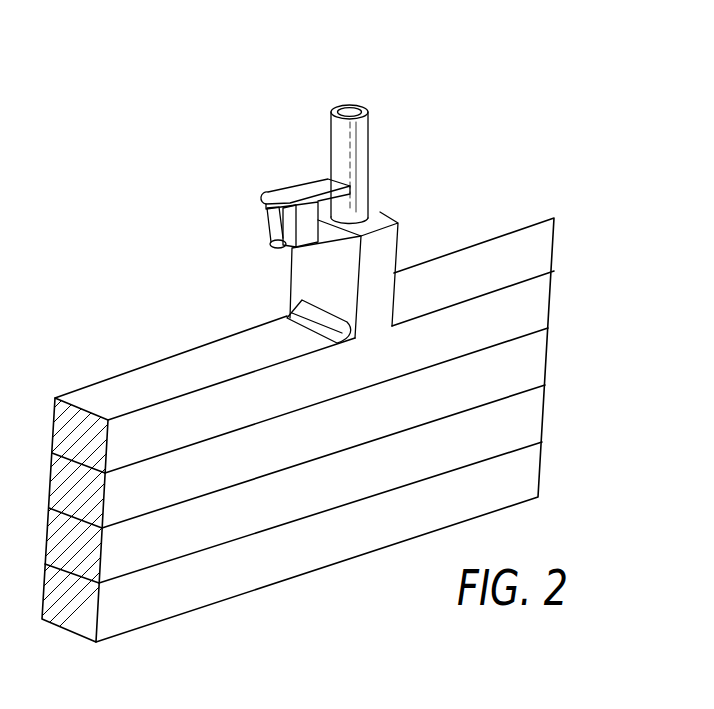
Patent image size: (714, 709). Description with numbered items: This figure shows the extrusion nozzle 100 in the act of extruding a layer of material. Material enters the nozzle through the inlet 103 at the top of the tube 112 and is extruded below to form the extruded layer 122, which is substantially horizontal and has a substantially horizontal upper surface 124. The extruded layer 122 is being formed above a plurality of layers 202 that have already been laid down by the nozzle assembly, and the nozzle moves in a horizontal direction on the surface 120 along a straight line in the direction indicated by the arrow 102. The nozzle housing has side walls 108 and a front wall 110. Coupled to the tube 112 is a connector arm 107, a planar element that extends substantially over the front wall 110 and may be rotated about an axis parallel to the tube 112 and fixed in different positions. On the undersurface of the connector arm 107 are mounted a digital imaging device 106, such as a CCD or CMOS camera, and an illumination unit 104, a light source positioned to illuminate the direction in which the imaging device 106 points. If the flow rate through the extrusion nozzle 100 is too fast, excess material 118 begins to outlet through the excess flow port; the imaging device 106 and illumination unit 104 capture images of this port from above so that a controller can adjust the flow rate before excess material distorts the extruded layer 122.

The extrusion nozzle 100 is at (398, 150).
The arrow 102 is at (322, 138).
The inlet 103 is at (363, 92).
The illumination unit 104 is at (273, 228).
The digital imaging device 106 is at (292, 235).
The connector arm 107 is at (287, 197).
The side walls 108 is at (382, 252).
The front wall 110 is at (302, 273).
The tube 112 is at (360, 137).
The excess material 118 is at (300, 308).
The surface 120 is at (97, 403).
The extruded layer 122 is at (530, 233).
The upper surface 124 is at (499, 207).
The plurality of layers 202 is at (577, 267).